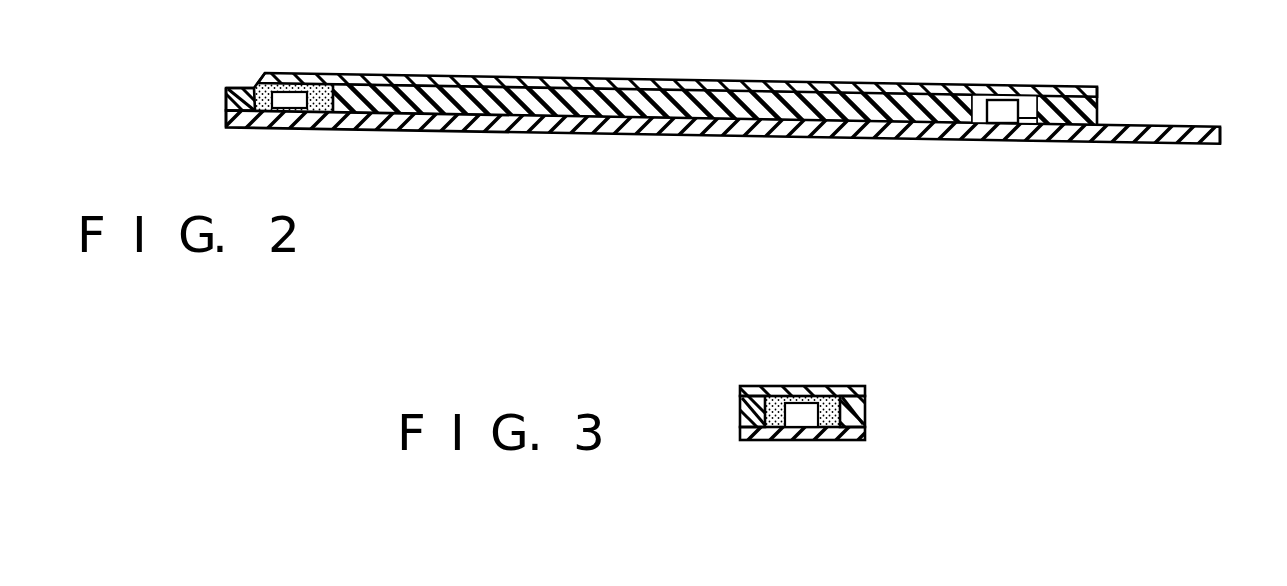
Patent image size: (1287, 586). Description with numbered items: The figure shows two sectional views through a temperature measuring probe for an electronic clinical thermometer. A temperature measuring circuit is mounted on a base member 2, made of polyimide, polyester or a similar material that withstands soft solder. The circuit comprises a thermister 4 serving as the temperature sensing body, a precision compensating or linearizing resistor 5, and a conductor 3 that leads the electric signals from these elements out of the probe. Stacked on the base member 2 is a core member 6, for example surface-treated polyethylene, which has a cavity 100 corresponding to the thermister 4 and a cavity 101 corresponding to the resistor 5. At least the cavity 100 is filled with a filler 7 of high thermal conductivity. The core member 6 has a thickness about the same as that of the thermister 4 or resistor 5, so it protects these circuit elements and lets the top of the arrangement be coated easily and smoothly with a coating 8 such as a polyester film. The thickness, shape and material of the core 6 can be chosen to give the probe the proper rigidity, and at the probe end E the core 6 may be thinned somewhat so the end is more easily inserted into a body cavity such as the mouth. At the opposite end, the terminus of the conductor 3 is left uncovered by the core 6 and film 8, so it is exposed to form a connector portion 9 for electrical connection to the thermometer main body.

In FIG. 2, the base member 2 is at (693, 129).
In FIG. 3, the base member 2 is at (843, 432).
In FIG. 2, the conductor 3 is at (303, 112).
In FIG. 3, the conductor 3 is at (778, 430).
In FIG. 2, the thermister 4 is at (288, 93).
In FIG. 3, the thermister 4 is at (797, 402).
In FIG. 2, the linearizing resistor 5 is at (1008, 98).
In FIG. 2, the core member 6 is at (247, 110).
In FIG. 3, the core member 6 is at (740, 408).
In FIG. 2, the filler 7 is at (325, 86).
In FIG. 3, the filler 7 is at (772, 395).
In FIG. 2, the coating 8 is at (440, 78).
In FIG. 3, the coating 8 is at (843, 393).
In FIG. 2, the connector portion 9 is at (1222, 134).
In FIG. 2, the cavity 100 is at (327, 125).
In FIG. 2, the cavity 101 is at (978, 118).
In FIG. 2, the probe end E is at (243, 87).